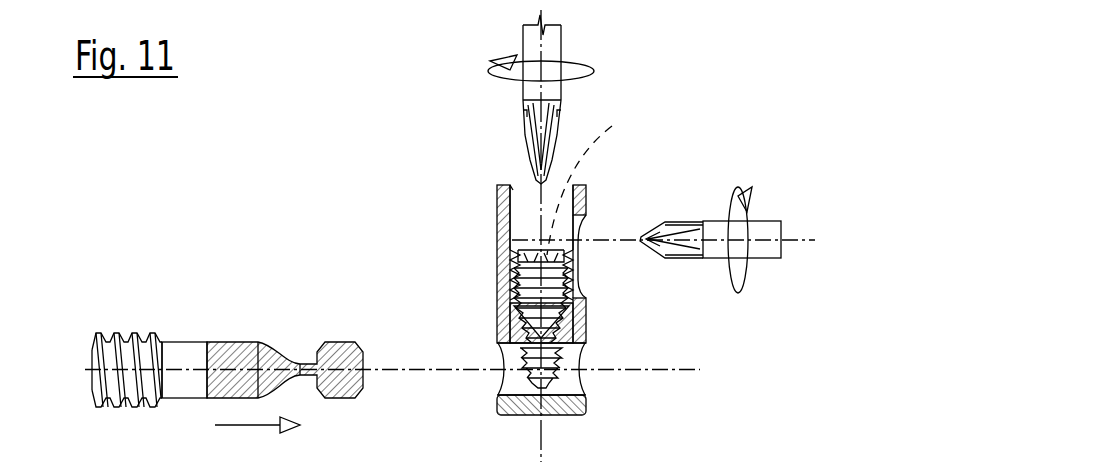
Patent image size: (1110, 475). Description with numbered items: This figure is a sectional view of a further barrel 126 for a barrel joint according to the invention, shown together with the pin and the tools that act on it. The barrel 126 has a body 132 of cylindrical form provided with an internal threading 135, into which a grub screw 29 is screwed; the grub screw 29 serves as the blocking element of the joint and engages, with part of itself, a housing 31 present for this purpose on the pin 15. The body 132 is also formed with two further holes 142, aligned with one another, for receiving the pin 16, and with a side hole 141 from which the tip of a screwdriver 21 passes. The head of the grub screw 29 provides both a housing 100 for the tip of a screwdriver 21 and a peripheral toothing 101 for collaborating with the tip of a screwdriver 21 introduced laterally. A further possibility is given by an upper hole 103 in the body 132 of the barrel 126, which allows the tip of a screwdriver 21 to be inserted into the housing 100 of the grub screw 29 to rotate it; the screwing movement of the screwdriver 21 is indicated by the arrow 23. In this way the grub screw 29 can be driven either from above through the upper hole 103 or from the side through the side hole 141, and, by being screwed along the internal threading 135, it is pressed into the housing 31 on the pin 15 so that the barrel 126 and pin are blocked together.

The pin 15 is at (113, 333).
The pin 16 is at (217, 342).
The housing 31 is at (298, 362).
The screwdriver 21 is at (522, 45).
The arrow 23 is at (592, 68).
The grub screw 29 is at (497, 287).
The housing 100 is at (612, 171).
The peripheral toothing 101 is at (525, 187).
The upper hole 103 is at (514, 214).
The barrel 126 is at (497, 222).
The body 132 is at (588, 197).
The internal threading 135 is at (517, 352).
The side hole 141 is at (586, 293).
The holes 142 is at (507, 387).